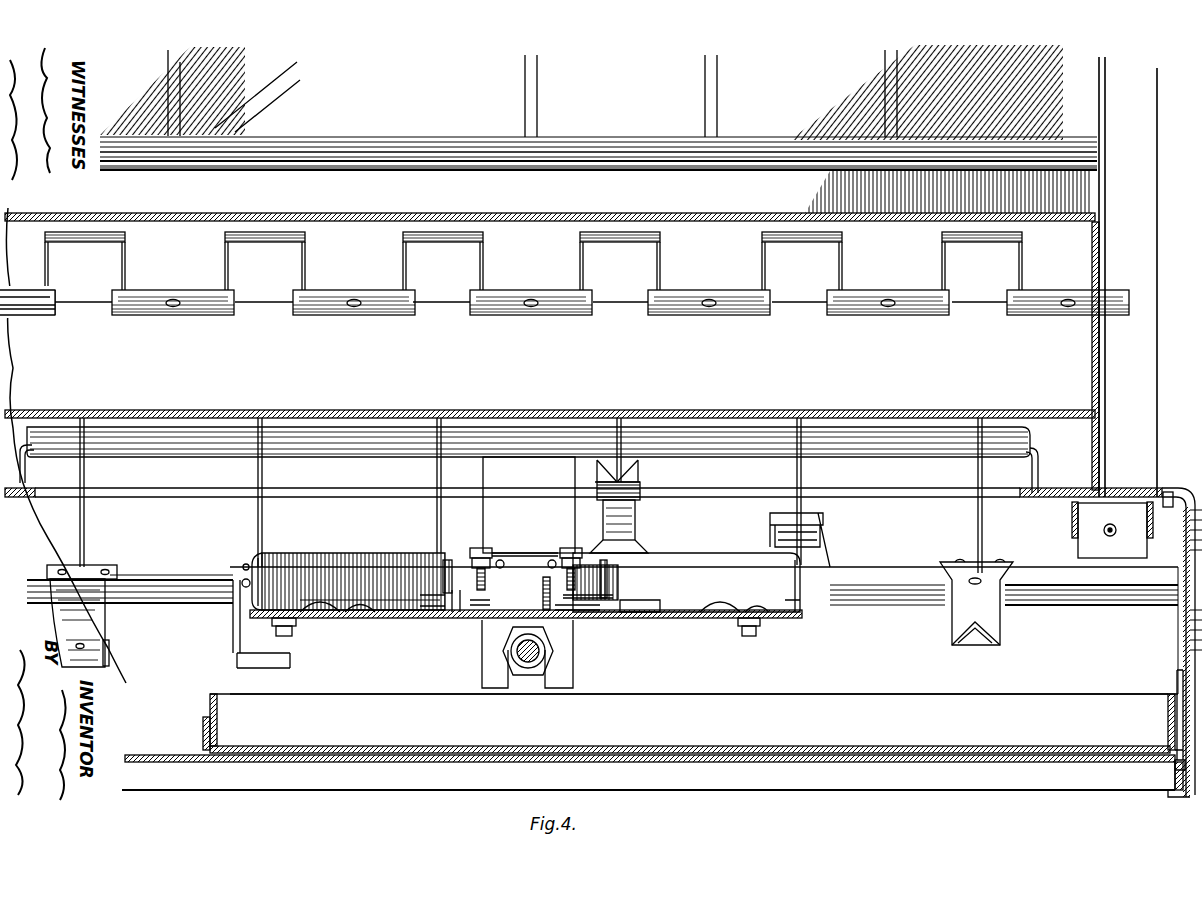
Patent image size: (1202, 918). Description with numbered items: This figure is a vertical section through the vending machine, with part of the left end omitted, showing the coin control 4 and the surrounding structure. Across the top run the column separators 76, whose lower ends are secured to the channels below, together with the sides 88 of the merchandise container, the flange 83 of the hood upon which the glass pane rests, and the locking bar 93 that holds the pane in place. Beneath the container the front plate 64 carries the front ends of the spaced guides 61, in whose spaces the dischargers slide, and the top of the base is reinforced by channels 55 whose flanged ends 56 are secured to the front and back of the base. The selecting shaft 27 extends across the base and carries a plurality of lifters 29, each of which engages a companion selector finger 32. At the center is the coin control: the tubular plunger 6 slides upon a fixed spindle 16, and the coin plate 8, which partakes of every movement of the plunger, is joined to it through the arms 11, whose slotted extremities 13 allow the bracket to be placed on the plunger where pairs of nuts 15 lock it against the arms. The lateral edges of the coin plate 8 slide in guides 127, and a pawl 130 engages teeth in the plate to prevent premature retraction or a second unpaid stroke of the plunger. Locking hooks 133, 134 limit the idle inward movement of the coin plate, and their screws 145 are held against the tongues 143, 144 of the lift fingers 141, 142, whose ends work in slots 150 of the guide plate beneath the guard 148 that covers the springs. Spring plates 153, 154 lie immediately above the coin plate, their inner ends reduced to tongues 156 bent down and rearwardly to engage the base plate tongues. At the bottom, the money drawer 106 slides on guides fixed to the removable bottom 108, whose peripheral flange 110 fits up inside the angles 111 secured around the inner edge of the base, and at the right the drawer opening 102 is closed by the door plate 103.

The coin control 4 is at (762, 601).
The tubular plunger 6 is at (508, 688).
The coin plate 8 is at (339, 608).
The arms 11 is at (495, 480).
The slots 13 is at (543, 677).
The nuts 15 is at (515, 652).
The spindle 16 is at (545, 670).
The selecting shaft 27 is at (1043, 596).
The lifters 29 is at (824, 548).
The selector finger 32 is at (806, 477).
The channels 55 is at (1073, 526).
The flanges 56 is at (1090, 538).
The guides 61 is at (517, 297).
The front plate 64 is at (588, 275).
The column separators 76 is at (732, 76).
The flange 83 is at (632, 166).
The sides 88 is at (1106, 112).
The locking bar 93 is at (590, 147).
The drawer opening 102 is at (1180, 672).
The door plate 103 is at (1180, 690).
The money drawer 106 is at (937, 713).
The removable bottom 108 is at (742, 758).
The peripheral flange 110 is at (1165, 795).
The angles 111 is at (1135, 758).
The guides 127 is at (316, 616).
The pawl 130 is at (380, 618).
The locking hook 133 is at (476, 615).
The locking hook 134 is at (606, 575).
The lift finger 141 is at (425, 625).
The lift finger 142 is at (625, 622).
The tongue 143 is at (455, 615).
The tongue 144 is at (600, 598).
The screws 145 is at (566, 547).
The guard 148 is at (530, 546).
The slots 150 is at (608, 567).
The spring plate 153 is at (343, 581).
The spring plate 154 is at (445, 618).
The tongues 156 is at (560, 625).